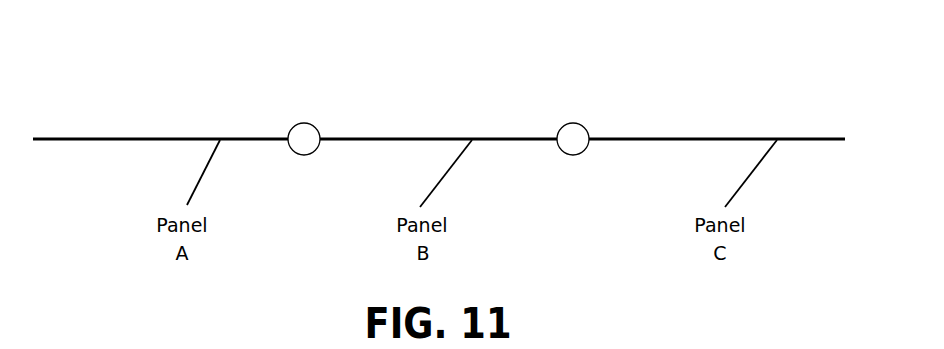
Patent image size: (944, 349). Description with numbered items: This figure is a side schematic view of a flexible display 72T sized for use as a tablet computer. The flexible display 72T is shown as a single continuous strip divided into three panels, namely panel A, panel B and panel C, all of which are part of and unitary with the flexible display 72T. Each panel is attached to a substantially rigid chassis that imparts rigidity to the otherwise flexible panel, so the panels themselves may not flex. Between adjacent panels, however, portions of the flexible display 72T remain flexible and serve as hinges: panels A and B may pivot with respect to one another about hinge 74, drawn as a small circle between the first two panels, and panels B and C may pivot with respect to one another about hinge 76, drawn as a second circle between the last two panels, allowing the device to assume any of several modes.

The flexible display 72T is at (696, 103).
The hinge 74 is at (304, 122).
The hinge 76 is at (571, 122).